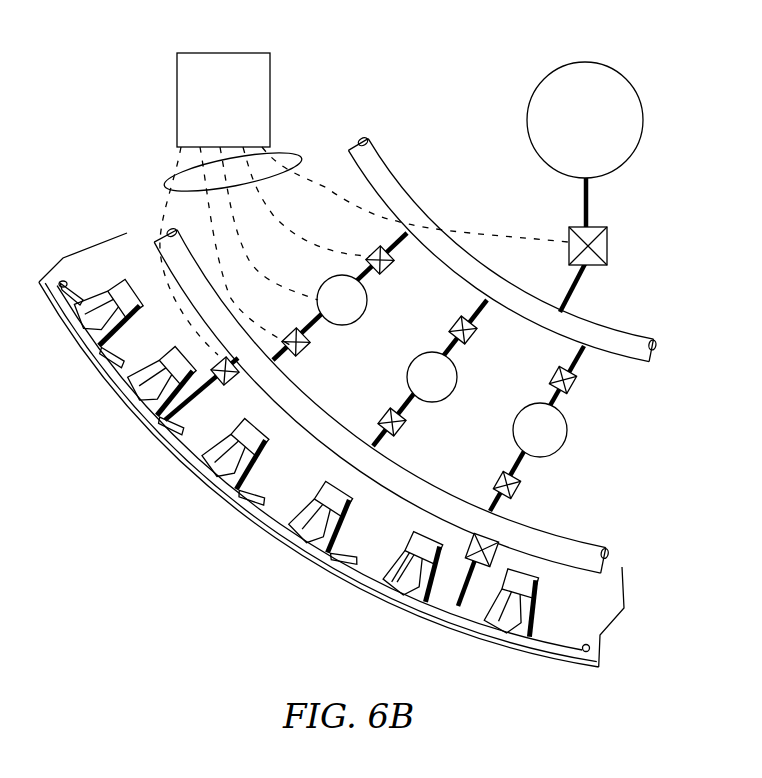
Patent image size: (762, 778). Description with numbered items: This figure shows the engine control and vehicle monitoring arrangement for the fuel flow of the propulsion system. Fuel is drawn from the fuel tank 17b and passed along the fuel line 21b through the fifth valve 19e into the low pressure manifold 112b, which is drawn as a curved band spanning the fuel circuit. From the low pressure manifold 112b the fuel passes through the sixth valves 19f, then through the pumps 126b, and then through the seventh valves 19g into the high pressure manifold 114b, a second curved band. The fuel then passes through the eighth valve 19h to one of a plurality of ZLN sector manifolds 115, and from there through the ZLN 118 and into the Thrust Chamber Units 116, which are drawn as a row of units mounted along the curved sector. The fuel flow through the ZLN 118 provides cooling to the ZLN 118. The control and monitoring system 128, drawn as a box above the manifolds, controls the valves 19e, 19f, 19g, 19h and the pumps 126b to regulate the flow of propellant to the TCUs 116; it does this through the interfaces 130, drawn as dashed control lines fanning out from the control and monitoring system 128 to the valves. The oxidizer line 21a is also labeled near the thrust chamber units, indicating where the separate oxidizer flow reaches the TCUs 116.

The control and monitoring system 128 is at (238, 91).
The interfaces 130 is at (304, 160).
The fuel tank 17b is at (609, 126).
The fuel line 21b is at (593, 202).
The fifth valve 19e is at (600, 243).
The sixth valves 19f is at (573, 390).
The seventh valves 19g is at (507, 493).
The eighth valve 19h is at (465, 540).
The low pressure manifold 112b is at (612, 338).
The high pressure manifold 114b is at (567, 550).
The pumps 126b is at (565, 443).
The ZLN 118 is at (318, 465).
The ZLN sector manifolds 115 is at (350, 565).
The Thrust Chamber Units (TCUs) 116 is at (505, 625).
The oxidizer line 21a is at (428, 612).